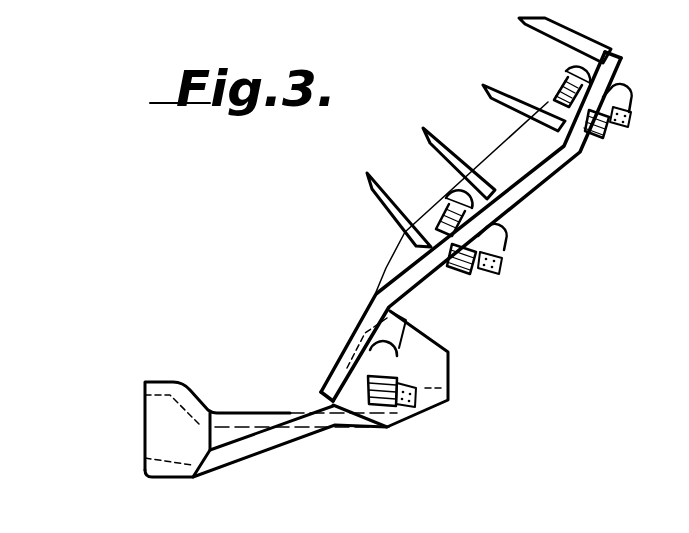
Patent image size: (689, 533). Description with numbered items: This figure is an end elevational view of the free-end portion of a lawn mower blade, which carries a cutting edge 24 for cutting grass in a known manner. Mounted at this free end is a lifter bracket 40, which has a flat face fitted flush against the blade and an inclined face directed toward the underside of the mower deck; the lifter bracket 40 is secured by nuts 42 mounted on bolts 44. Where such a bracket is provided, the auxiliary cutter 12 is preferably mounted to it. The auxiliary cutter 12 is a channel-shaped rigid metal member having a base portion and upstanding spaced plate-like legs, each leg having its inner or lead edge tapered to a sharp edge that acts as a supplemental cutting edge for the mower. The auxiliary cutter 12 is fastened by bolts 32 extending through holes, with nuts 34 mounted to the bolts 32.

The auxiliary cutter 12 is at (501, 104).
The cutting edge 24 is at (200, 469).
The bolt 32 is at (499, 264).
The nut 34 is at (494, 238).
The lifter bracket 40 is at (392, 266).
The nut 42 is at (410, 408).
The bolt 44 is at (398, 365).